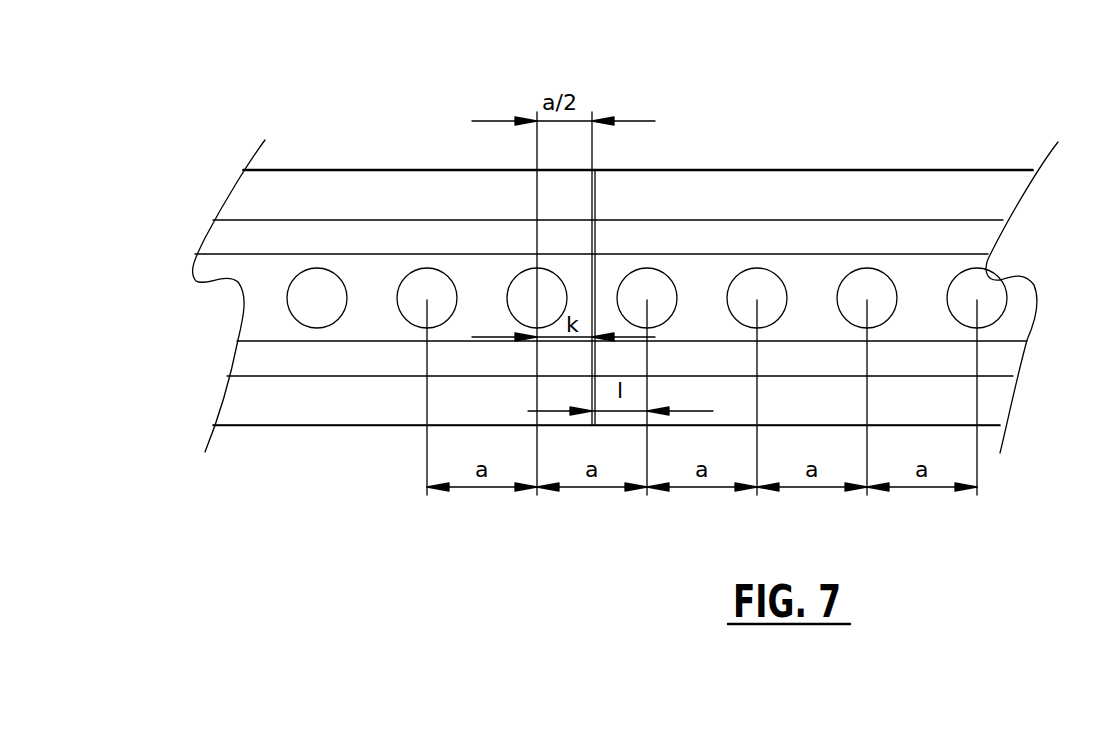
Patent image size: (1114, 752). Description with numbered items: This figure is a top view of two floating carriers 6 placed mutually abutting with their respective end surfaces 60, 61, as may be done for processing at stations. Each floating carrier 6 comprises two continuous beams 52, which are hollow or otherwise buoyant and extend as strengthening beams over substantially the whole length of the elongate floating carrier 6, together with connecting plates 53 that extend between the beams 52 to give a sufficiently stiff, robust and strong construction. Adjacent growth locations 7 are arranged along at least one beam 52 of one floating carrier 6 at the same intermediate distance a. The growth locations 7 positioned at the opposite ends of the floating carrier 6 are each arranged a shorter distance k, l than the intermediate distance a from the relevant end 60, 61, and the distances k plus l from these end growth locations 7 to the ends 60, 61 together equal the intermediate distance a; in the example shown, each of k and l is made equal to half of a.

The floating carrier 6 is at (289, 470).
The growth location 7 is at (323, 255).
The continuous beam 52 is at (792, 187).
The connecting plate 53 is at (230, 202).
The end surface 60 is at (590, 193).
The end surface 61 is at (596, 203).